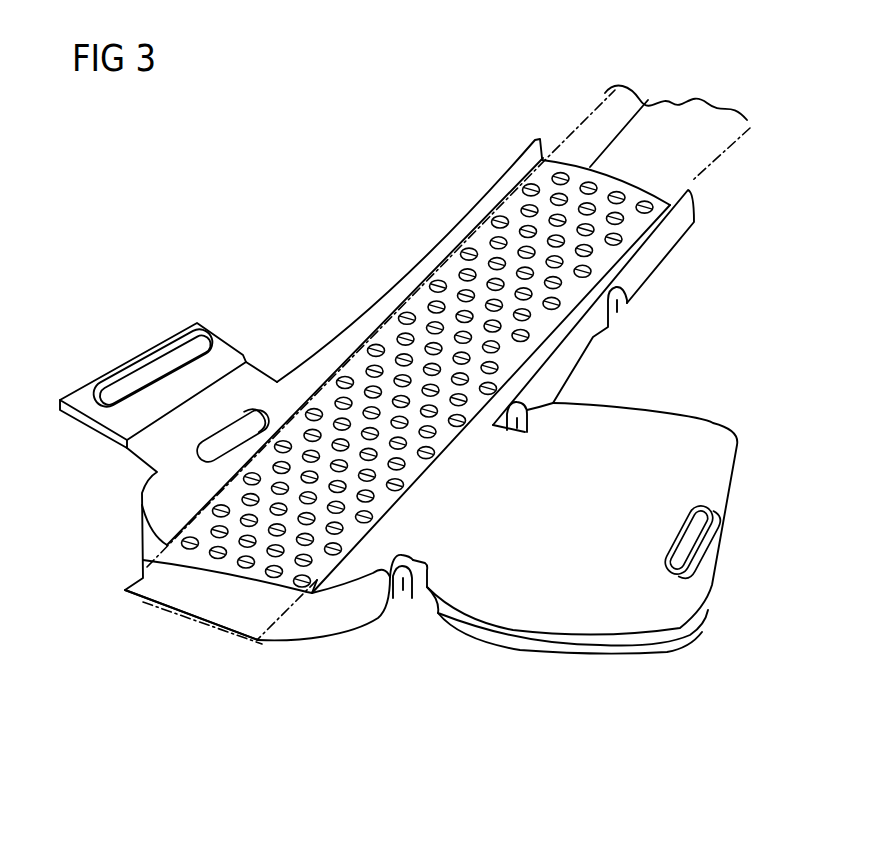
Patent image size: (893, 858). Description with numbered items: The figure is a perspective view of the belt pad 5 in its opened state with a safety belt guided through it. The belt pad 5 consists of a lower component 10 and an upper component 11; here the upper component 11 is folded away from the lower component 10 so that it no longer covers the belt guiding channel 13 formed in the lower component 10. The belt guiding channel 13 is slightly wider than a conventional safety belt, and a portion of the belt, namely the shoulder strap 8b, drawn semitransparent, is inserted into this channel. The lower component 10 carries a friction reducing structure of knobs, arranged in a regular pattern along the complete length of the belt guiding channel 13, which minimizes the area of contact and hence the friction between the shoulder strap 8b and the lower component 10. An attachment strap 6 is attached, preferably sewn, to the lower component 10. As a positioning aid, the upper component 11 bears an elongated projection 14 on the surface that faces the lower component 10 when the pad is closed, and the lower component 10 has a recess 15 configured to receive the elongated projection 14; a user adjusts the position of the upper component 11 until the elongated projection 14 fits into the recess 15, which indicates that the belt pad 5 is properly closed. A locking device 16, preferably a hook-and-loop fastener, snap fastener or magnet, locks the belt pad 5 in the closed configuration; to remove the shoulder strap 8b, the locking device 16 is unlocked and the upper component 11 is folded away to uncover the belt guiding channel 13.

The belt pad 5 is at (295, 218).
The attachment strap 6 is at (697, 107).
The shoulder strap 8b is at (585, 130).
The lower component 10 is at (583, 342).
The upper component 11 is at (668, 432).
The belt guiding channel 13 is at (160, 665).
The elongated projection 14 is at (685, 542).
The recess 15 is at (248, 433).
The locking device 16 is at (147, 376).